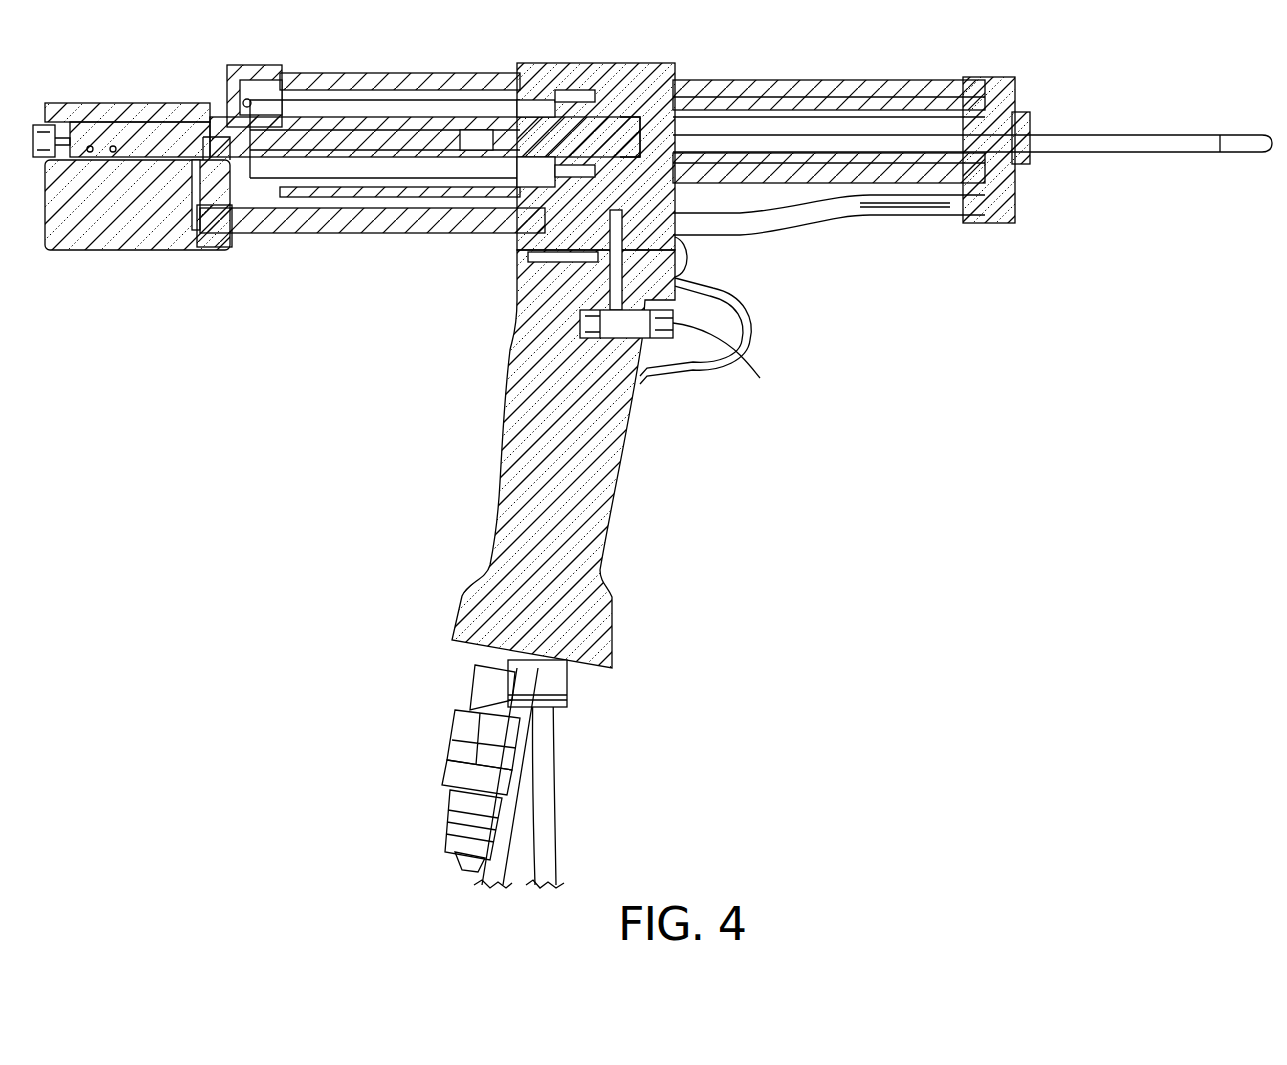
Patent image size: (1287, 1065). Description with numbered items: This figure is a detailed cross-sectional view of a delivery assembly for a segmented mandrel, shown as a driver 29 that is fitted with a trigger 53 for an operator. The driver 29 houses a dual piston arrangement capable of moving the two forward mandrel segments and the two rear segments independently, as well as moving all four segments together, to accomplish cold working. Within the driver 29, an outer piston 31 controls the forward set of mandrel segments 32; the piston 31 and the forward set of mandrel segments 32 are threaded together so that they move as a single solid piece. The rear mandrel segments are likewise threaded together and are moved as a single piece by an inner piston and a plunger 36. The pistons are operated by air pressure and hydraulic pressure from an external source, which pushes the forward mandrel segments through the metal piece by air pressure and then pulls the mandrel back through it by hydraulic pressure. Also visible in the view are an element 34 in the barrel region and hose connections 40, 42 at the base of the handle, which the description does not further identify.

The driver 29 is at (487, 268).
The outer piston 31 is at (498, 92).
The forward set of mandrel segments 32 is at (1120, 133).
The lower tube 34 is at (455, 222).
The plunger 36 is at (146, 108).
The supply hose with fitting 40 is at (510, 852).
The supply hose 42 is at (556, 778).
The trigger 53 is at (760, 378).